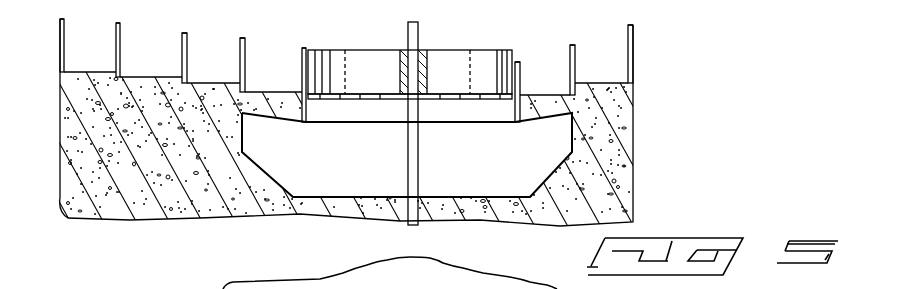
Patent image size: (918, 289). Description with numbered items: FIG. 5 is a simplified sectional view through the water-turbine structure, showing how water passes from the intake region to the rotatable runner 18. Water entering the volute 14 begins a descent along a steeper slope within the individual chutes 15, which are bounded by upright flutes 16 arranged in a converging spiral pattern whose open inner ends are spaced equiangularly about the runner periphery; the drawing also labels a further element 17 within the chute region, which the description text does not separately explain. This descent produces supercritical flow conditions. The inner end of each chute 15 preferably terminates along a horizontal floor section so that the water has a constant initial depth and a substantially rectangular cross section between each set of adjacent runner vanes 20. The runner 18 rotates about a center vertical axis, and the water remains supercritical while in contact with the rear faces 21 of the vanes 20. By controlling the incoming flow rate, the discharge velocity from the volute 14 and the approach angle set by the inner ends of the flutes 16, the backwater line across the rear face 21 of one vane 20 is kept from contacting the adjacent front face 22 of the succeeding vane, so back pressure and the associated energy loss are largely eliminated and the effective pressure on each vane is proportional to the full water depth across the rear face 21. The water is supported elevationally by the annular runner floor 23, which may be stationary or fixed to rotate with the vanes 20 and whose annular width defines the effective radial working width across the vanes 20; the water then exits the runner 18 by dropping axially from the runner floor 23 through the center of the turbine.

The volute 14 is at (616, 15).
The chutes 15 is at (104, 25).
The upright flutes 16 is at (65, 45).
The base surfaces 17 is at (102, 73).
The rotatable runner 18 is at (458, 49).
The runner vanes 20 is at (408, 30).
The rear faces 21 is at (476, 79).
The front face 22 is at (366, 79).
The runner floor 23 is at (345, 99).